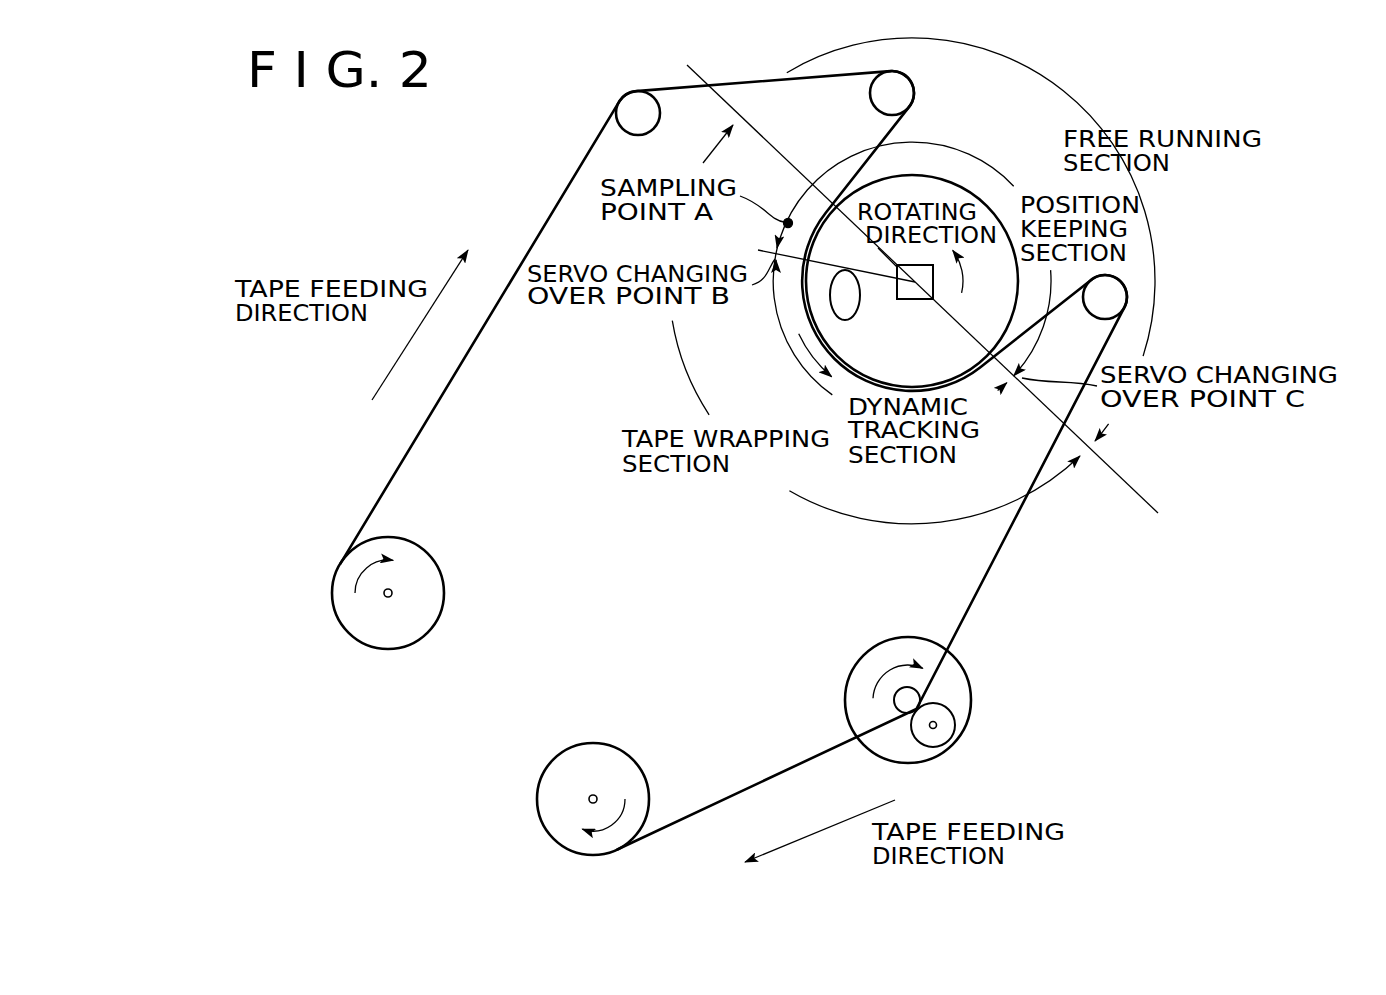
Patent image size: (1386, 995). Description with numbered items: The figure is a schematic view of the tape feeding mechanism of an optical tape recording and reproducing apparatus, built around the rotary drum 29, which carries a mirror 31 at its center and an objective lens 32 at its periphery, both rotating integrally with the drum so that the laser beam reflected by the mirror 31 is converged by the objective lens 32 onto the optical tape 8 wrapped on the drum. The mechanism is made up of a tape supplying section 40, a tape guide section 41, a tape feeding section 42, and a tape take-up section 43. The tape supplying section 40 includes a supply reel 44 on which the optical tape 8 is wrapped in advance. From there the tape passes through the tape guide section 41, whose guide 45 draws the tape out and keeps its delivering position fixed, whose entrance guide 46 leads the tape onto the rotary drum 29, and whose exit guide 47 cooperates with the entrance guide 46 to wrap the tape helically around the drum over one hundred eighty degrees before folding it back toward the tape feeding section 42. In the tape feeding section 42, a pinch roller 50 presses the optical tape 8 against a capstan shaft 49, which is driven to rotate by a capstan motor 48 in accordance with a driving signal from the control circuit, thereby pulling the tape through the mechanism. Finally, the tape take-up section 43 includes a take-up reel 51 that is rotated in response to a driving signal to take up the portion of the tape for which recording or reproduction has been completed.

The optical tape 8 is at (553, 205).
The rotary drum 29 is at (972, 188).
The mirror 31 is at (912, 300).
The objective lens 32 is at (857, 307).
The tape supplying section 40 is at (452, 586).
The tape guide section 41 is at (1187, 312).
The tape feeding section 42 is at (987, 697).
The tape take-up section 43 is at (648, 755).
The supply reel 44 is at (347, 634).
The guide 45 is at (614, 128).
The entrance guide 46 is at (871, 98).
The exit guide 47 is at (1087, 306).
The capstan motor 48 is at (875, 644).
The capstan shaft 49 is at (894, 708).
The pinch roller 50 is at (944, 738).
The take-up reel 51 is at (560, 756).